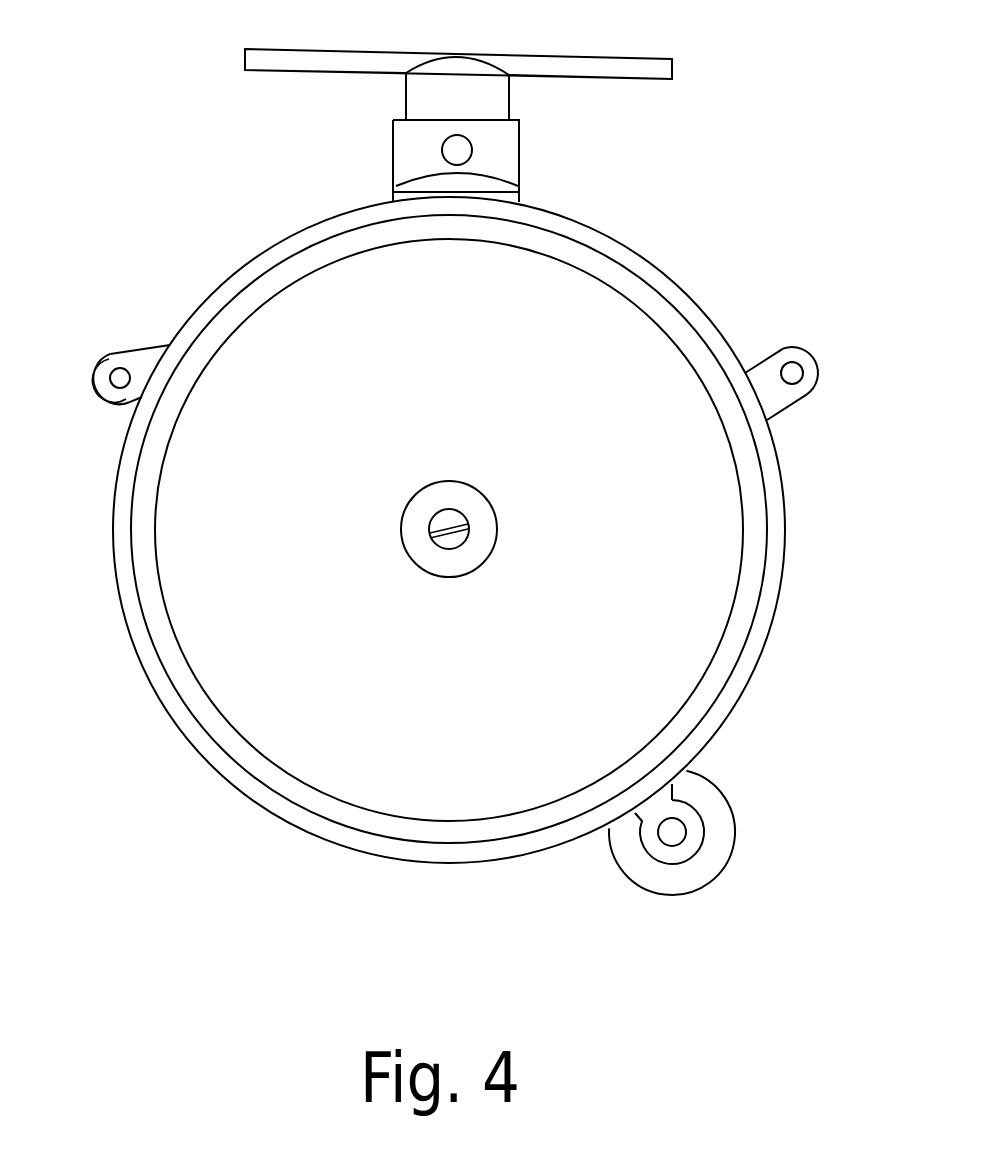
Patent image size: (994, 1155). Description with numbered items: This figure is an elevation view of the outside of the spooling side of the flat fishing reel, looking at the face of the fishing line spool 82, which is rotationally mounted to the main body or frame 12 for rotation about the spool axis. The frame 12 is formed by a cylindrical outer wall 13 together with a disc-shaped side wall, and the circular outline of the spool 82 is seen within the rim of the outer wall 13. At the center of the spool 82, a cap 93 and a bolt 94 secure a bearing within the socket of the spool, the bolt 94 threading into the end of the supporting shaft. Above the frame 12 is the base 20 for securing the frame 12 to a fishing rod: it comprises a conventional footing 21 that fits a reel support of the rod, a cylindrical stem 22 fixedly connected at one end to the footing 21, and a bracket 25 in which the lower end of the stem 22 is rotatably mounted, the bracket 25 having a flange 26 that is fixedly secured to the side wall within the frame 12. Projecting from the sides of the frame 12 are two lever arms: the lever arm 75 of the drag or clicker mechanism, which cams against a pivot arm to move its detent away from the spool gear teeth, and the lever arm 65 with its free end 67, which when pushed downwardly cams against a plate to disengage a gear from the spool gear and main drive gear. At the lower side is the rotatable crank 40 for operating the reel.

The main body or frame 12 is at (694, 291).
The cylindrical outer wall 13 is at (766, 648).
The fishing line spool 82 is at (145, 562).
The cap 93 is at (485, 528).
The bolt 94 is at (452, 512).
The base 20 is at (454, 110).
The footing 21 is at (562, 62).
The cylindrical stem 22 is at (408, 97).
The bracket 25 is at (508, 147).
The flange 26 is at (520, 198).
The lever arm 75 is at (143, 355).
The lever arm 65 is at (783, 398).
The free end 67 is at (802, 368).
The rotatable crank 40 is at (710, 798).